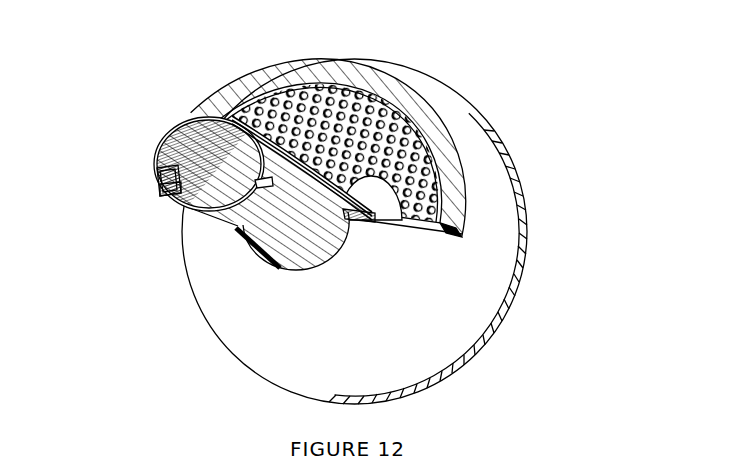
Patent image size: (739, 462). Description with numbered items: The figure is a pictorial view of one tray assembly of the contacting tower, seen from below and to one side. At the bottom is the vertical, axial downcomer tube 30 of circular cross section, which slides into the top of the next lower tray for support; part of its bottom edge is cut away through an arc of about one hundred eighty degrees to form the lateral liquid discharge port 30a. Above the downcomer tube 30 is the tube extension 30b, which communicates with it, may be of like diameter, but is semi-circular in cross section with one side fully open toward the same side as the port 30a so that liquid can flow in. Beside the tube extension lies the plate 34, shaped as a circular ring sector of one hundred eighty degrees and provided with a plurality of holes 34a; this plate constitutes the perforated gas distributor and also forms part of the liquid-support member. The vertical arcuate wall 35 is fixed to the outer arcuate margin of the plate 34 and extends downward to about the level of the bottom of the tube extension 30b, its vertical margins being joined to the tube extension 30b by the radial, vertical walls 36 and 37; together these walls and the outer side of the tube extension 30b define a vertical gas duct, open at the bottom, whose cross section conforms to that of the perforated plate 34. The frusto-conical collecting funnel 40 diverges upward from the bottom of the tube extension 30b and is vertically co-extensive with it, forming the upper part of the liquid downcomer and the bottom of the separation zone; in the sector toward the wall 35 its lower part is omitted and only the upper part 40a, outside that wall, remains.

The downcomer tube 30 is at (237, 246).
The lateral liquid discharge port 30a is at (158, 172).
The tube extension 30b is at (352, 214).
The perforated plate 34 is at (327, 131).
The holes 34a is at (273, 100).
The vertical arcuate wall 35 is at (208, 102).
The radial vertical wall 36 is at (170, 193).
The radial vertical wall 37 is at (423, 224).
The frusto-conical collecting funnel 40 is at (237, 339).
The upper part of funnel 40a is at (514, 224).